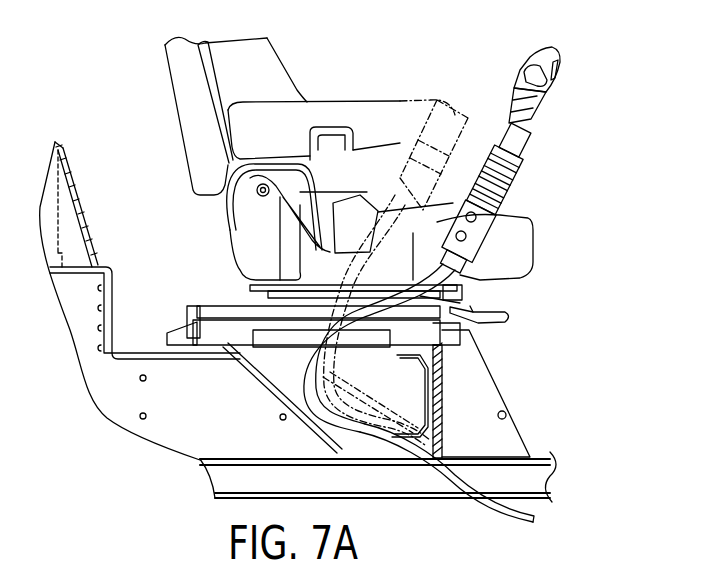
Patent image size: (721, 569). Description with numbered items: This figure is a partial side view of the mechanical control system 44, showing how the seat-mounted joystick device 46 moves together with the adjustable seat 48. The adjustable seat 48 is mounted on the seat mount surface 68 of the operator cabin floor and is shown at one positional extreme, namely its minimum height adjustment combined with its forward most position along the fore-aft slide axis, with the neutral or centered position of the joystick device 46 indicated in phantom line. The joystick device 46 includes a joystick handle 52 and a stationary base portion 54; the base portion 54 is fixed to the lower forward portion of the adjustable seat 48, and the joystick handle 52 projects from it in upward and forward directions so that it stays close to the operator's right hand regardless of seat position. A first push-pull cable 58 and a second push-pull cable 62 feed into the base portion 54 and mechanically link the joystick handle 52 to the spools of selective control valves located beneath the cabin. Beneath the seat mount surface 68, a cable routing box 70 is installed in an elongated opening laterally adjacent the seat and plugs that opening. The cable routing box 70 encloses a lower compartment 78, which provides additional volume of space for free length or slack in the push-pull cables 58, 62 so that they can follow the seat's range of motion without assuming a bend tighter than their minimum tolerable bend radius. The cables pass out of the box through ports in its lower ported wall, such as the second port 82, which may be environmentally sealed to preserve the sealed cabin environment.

The mechanical control system 44 is at (544, 382).
The seat-mounted joystick device 46 is at (560, 145).
The adjustable seat 48 is at (260, 84).
The joystick handle 52 is at (515, 93).
The stationary base portion 54 is at (510, 200).
The first push-pull cable 58 is at (382, 300).
The second push-pull cable 62 is at (460, 303).
The seat mount surface 68 is at (150, 353).
The cable routing box 70 is at (256, 405).
The lower compartment 78 is at (401, 399).
The second port 82 is at (404, 440).